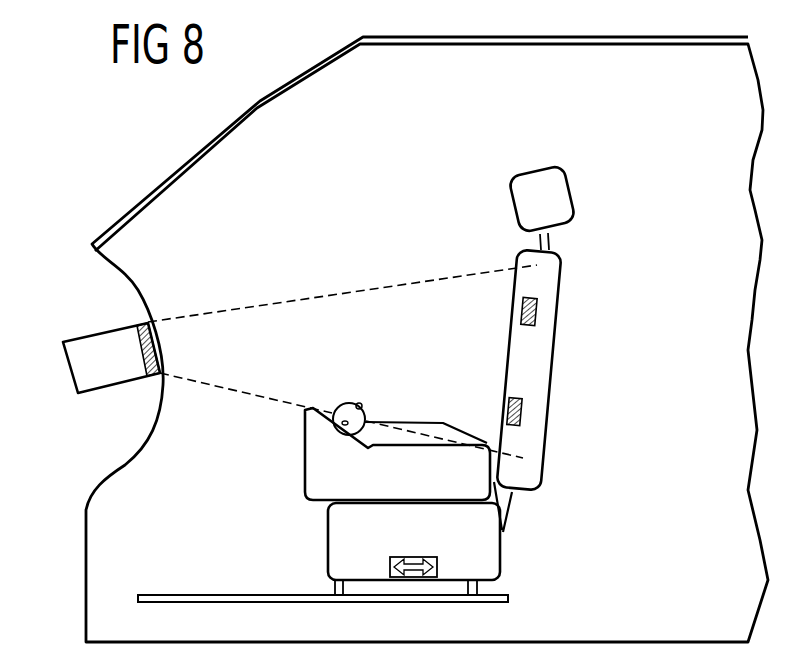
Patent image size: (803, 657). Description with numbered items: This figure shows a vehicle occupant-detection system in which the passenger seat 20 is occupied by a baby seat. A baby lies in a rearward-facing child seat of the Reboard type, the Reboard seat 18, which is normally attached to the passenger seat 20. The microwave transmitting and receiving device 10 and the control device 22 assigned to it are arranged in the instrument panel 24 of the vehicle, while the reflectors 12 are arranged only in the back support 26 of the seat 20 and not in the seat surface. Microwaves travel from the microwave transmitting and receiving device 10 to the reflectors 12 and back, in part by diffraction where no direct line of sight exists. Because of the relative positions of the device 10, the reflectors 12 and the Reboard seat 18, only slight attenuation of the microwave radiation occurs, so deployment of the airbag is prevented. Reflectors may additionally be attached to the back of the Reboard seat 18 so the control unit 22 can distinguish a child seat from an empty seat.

The microwave transmitting and receiving device 10 is at (157, 358).
The reflectors 12 is at (537, 313).
The Reboard seat 18 is at (312, 460).
The passenger seat 20 is at (487, 562).
The control device 22 is at (98, 348).
The instrument panel 24 is at (104, 423).
The back support 26 is at (555, 272).